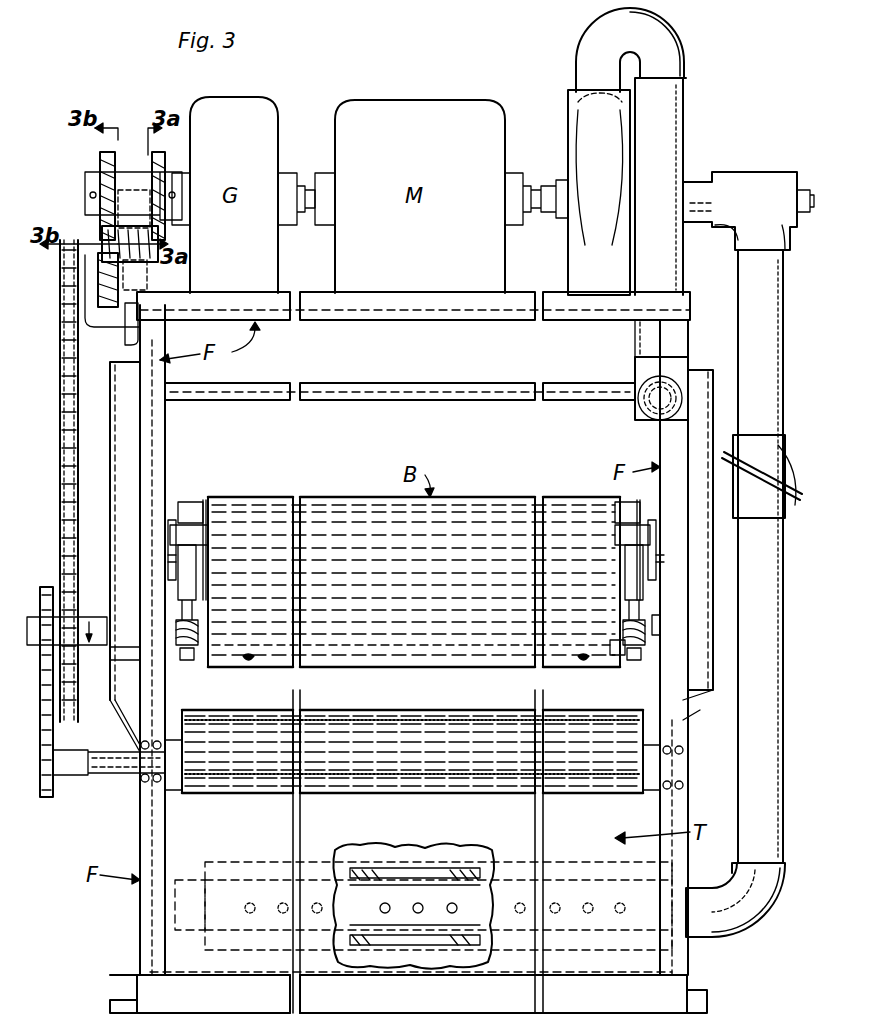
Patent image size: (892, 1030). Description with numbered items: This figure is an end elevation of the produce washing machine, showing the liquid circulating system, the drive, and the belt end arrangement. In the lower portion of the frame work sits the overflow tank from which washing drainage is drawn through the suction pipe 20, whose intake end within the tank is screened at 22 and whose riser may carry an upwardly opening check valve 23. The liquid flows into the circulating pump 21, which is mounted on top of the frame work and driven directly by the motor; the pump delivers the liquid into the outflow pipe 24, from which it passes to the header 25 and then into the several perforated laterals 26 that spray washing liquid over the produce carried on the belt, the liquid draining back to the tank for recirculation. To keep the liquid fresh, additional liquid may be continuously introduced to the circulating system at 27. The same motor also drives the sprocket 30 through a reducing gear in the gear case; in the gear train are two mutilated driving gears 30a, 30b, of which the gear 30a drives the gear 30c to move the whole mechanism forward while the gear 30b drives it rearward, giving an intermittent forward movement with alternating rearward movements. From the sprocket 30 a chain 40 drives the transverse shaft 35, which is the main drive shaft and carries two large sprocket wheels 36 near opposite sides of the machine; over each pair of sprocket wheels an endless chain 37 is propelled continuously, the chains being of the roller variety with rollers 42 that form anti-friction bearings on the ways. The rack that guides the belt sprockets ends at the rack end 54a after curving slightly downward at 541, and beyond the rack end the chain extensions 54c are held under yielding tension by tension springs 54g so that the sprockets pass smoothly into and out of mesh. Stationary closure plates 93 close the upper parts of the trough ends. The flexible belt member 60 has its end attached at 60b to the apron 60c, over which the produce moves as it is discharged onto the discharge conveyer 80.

The suction pipe 20 is at (770, 748).
The circulating pump 21 is at (599, 192).
The screen 22 is at (425, 860).
The check valve 23 is at (770, 460).
The outflow pipe 24 is at (668, 133).
The header 25 is at (645, 432).
The perforated laterals 26 is at (410, 384).
The fresh liquid inlet 27 is at (805, 192).
The sprocket 30 is at (107, 210).
The mutilated driving gear 30a is at (165, 152).
The mutilated driving gear 30b is at (102, 152).
The gear 30c is at (100, 235).
The transverse shaft 35 is at (108, 605).
The sprocket wheel 36 is at (172, 558).
The endless chain 37 is at (170, 530).
The chain 40 is at (60, 436).
The rollers 42 is at (656, 622).
The rack end 54a is at (210, 535).
The chain extension 54c is at (210, 574).
The tension spring 54g is at (178, 660).
The curved rack portion 541 is at (190, 502).
The belt member 60 is at (357, 497).
The belt attachment point 60b is at (250, 662).
The apron 60c is at (432, 689).
The discharge conveyer 80 is at (402, 720).
The stationary closure plate 93 is at (206, 520).